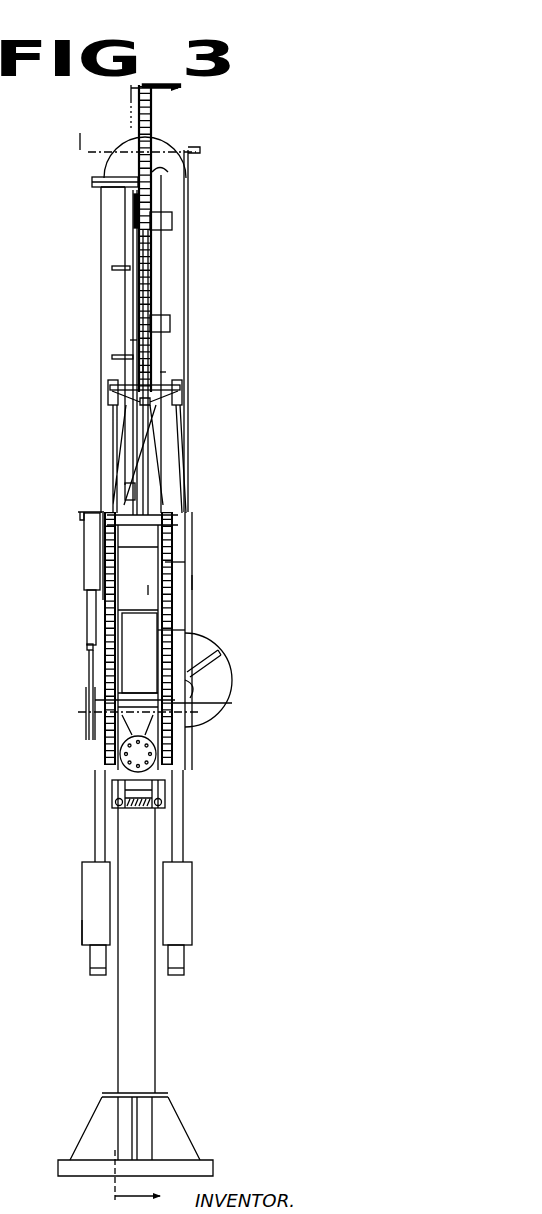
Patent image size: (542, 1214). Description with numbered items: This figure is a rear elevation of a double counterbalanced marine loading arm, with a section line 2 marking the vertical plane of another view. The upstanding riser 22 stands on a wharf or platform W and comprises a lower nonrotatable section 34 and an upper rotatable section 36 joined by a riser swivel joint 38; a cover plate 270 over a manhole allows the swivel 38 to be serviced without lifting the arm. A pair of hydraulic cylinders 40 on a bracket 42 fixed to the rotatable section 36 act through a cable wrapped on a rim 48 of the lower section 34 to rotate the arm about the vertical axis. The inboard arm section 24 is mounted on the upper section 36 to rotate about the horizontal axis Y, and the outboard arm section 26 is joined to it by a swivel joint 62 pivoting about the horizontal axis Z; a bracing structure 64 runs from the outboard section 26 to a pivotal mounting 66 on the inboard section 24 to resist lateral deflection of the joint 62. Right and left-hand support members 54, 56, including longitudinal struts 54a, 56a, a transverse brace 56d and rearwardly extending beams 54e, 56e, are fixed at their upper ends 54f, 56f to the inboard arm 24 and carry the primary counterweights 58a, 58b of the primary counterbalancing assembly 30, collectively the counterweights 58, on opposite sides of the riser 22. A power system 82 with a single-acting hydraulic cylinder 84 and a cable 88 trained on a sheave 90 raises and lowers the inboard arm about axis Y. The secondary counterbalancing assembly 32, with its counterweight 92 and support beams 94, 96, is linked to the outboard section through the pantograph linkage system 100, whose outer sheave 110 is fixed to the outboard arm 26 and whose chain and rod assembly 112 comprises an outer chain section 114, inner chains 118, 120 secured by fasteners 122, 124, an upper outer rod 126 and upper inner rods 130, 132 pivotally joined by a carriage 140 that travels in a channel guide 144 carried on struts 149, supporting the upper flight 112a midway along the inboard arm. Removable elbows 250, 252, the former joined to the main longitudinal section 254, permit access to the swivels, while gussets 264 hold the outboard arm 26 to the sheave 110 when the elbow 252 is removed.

The section line 2- 2 is at (146, 643).
The upstanding riser 22 is at (118, 1060).
The inboard arm section 24 is at (182, 304).
The outboard arm section 26 is at (103, 288).
The primary counterbalancing assembly 30 is at (82, 898).
The secondary counterbalancing assembly 32 is at (148, 590).
The lower nonrotatable riser section 34 is at (148, 1025).
The upper rotatable riser section 36 is at (150, 773).
The riser swivel joint 38 is at (165, 790).
The hydraulic cylinders 40 is at (118, 803).
The bracket 42 is at (110, 789).
The rim 48 is at (137, 808).
The right-hand support member 54 is at (184, 753).
The longitudinal strut 54a is at (183, 541).
The rearwardly extending beam 54e is at (181, 853).
The upper end of right-hand member 54f is at (184, 418).
The left-hand support member 56 is at (85, 746).
The longitudinal strut 56a is at (101, 603).
The transverse brace 56d is at (78, 511).
The rearwardly extending beam 56e is at (92, 870).
The upper end of left-hand member 56f is at (172, 410).
The primary counterweights 58 is at (82, 928).
The primary counterweight 58a is at (183, 925).
The primary counterweight 58b is at (92, 947).
The swivel joint 62 is at (152, 132).
The bracing structure 64 is at (190, 177).
The pivotal mounting 66 is at (200, 150).
The power system 82 is at (84, 541).
The single-acting hydraulic cylinder 84 is at (87, 577).
The cable 88 is at (86, 638).
The sheave 90 is at (85, 690).
The counterweight 92 is at (148, 570).
The support beam 94 is at (165, 630).
The support beam 96 is at (120, 670).
The pantograph linkage system 100 is at (176, 388).
The outer sheave 110 is at (138, 137).
The chain and rod assembly 112 is at (153, 253).
The upper flight 112a is at (130, 337).
The outer chain section 114 is at (130, 200).
The inner chain 118 is at (172, 563).
The inner chain 120 is at (112, 649).
The fastener 122 is at (232, 703).
The fastener 124 is at (110, 702).
The upper outer rod 126 is at (143, 365).
The upper inner rod 130 is at (175, 457).
The upper inner rod 132 is at (113, 426).
The carriage 140 is at (165, 378).
The guide 144 is at (132, 343).
The struts 149 is at (172, 220).
The removable elbow 250 is at (215, 683).
The removable elbow 252 is at (100, 177).
The main longitudinal section 254 is at (195, 582).
The gusset 264 is at (118, 266).
The cover plate 270 is at (128, 760).
The wharf or platform W is at (190, 1170).
The horizontal axis Y is at (76, 711).
The horizontal axis Z is at (81, 129).